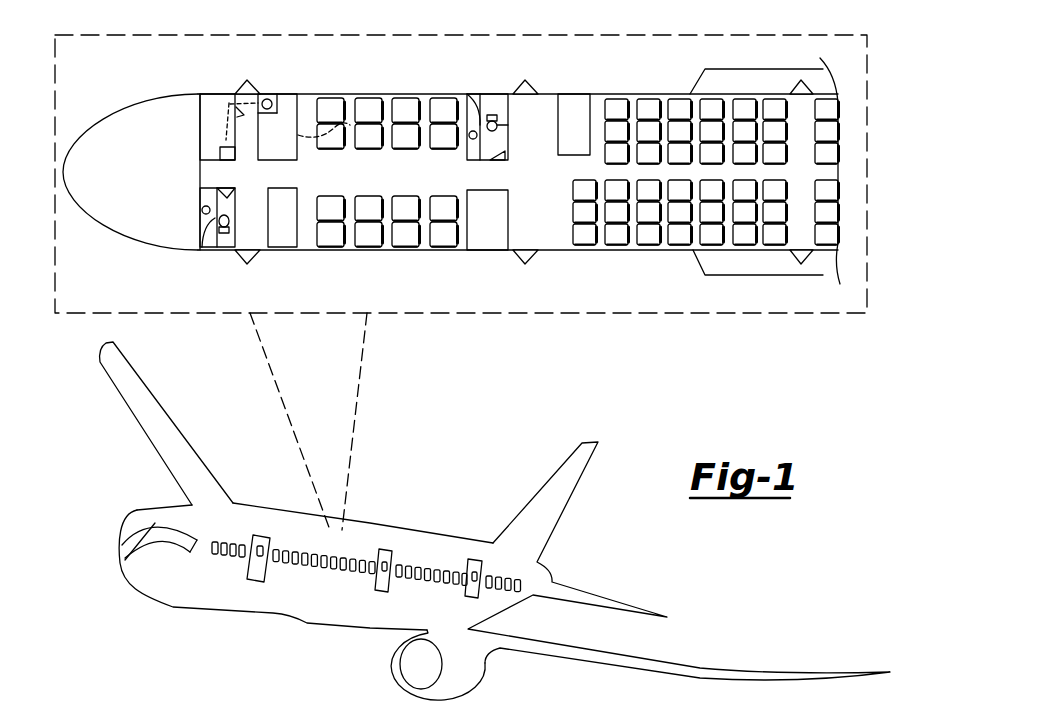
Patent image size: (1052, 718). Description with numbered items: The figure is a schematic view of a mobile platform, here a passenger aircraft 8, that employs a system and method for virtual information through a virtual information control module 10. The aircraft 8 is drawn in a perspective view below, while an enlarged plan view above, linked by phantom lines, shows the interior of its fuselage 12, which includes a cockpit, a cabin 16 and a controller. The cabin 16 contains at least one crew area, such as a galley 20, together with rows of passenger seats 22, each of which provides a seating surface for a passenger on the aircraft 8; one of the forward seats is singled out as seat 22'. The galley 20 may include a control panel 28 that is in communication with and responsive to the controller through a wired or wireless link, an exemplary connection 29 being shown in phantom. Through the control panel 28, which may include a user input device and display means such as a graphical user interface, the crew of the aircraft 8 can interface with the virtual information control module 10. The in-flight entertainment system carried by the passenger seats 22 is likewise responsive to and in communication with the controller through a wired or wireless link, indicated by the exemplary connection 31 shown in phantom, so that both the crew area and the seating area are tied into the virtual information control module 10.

The passenger aircraft 8 is at (105, 478).
The virtual information control module 10 is at (266, 98).
The fuselage 12 is at (185, 598).
The cabin 16 is at (398, 90).
The galley 20 is at (298, 118).
The passenger seat 22 is at (578, 172).
The premium passenger seat 22' is at (338, 206).
The control panel 28 is at (228, 160).
The connection 29 is at (229, 103).
The connection 31 is at (312, 146).